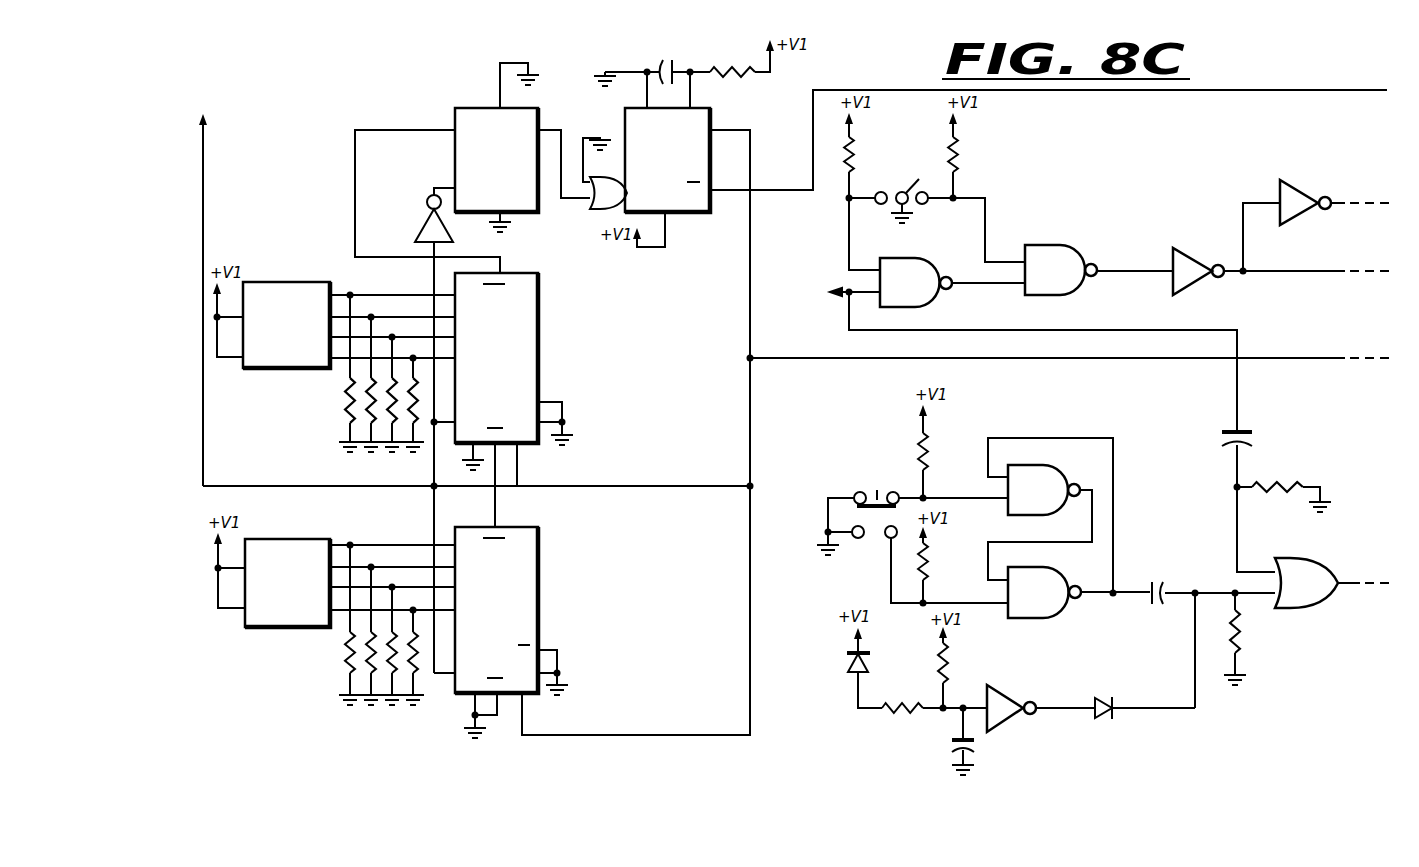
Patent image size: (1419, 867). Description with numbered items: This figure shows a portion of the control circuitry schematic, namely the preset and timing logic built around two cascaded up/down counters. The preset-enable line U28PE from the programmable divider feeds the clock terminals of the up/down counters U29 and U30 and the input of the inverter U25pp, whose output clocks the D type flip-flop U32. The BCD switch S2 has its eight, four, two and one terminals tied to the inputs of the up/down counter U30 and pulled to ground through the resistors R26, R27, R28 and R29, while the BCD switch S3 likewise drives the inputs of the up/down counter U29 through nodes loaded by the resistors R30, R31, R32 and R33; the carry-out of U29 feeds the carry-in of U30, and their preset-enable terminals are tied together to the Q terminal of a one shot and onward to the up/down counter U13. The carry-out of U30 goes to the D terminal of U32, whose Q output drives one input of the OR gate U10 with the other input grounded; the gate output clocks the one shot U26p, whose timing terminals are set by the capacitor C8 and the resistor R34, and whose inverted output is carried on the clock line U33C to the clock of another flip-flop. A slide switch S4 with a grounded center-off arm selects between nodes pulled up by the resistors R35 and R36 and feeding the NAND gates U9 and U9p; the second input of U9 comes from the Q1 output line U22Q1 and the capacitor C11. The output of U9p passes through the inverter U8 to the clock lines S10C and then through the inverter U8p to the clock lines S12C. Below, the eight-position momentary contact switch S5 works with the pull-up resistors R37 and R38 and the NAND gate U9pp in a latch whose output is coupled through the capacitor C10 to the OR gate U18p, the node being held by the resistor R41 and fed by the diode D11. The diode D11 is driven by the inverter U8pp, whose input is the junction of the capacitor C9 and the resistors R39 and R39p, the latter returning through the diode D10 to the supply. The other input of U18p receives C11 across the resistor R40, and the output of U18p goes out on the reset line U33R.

The PE terminal of programmable divider U28 U28PE is at (230, 290).
The D type flip-flop U32 is at (496, 160).
The inverter U25pp is at (425, 222).
The OR gate U10 is at (602, 205).
The one shot U26p is at (667, 160).
The capacitor C8 is at (672, 52).
The resistor R34 is at (752, 52).
The C terminal of D type flip-flop U33 U33C is at (1308, 78).
The resistor R35 is at (856, 165).
The single pole double throw switch S4 is at (905, 198).
The resistor R36 is at (960, 165).
The NAND gate U9 is at (980, 386).
The NAND gate U9p is at (1061, 270).
The Q1 terminal of U22 U22Q1 is at (804, 304).
The inverter U8 is at (1200, 243).
The inverter U8p is at (1300, 180).
The C terminals of binary coded switch S12 S12C is at (1365, 190).
The C terminals of binary coded switch S10 S10C is at (1349, 259).
The up/down counter U13 is at (1321, 346).
The BCD switch S2 is at (286, 325).
The resistor R26 is at (343, 386).
The resistor R27 is at (380, 397).
The resistor R28 is at (388, 413).
The resistor R29 is at (412, 434).
The up/down counter U30 is at (496, 359).
The BCD switch S3 is at (287, 581).
The resistor R30 is at (344, 640).
The resistor R31 is at (380, 650).
The resistor R32 is at (390, 667).
The resistor R33 is at (410, 683).
The up/down counter U29 is at (496, 611).
The resistor R37 is at (930, 468).
The momentary contact switch S5 is at (864, 488).
The resistor R38 is at (930, 578).
The NAND gate U9pp is at (1044, 592).
The capacitor C11 is at (1222, 438).
The resistor R40 is at (1286, 483).
The capacitor C10 is at (1172, 577).
The OR gate U18p is at (1322, 605).
The reset terminal of U33 U33R is at (1367, 570).
The resistor R41 is at (1240, 645).
The diode D10 is at (848, 666).
The resistor R39p is at (895, 724).
The resistor R39 is at (948, 676).
The capacitor C9 is at (978, 746).
The inverter U8pp is at (1012, 694).
The diode D11 is at (1104, 725).